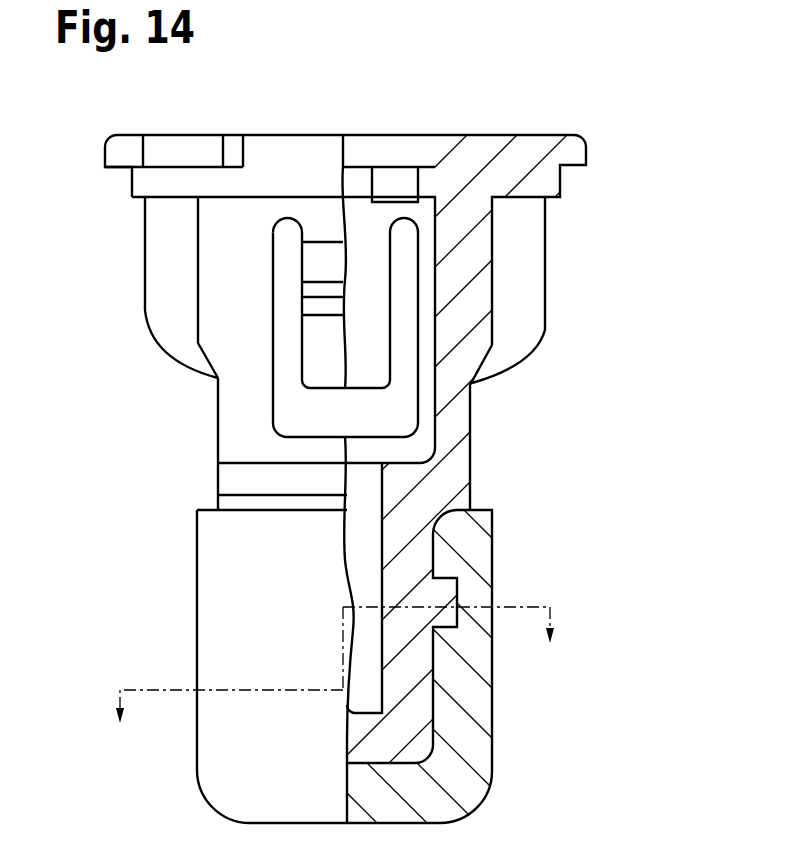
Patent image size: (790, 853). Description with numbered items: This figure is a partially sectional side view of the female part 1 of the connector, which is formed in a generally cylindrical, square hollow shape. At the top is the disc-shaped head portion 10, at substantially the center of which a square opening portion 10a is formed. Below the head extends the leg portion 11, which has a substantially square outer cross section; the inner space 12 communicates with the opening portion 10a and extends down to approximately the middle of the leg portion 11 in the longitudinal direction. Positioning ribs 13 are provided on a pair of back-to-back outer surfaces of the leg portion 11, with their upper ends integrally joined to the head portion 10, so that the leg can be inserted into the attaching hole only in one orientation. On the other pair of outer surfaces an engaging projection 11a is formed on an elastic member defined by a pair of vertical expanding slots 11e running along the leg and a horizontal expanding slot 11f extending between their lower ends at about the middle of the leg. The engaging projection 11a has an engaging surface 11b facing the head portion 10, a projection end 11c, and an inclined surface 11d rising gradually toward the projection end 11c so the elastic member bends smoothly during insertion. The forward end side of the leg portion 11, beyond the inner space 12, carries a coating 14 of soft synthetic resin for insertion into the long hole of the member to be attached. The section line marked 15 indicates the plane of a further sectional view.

The female part 1 is at (603, 168).
The head portion 10 is at (508, 163).
The opening portion 10a is at (381, 152).
The leg portion 11 is at (473, 463).
The engaging projection 11a is at (310, 343).
The engaging surface 11b is at (322, 282).
The projection end 11c is at (303, 303).
The inclined surface 11d is at (312, 365).
The vertical expanding slot 11e is at (283, 317).
The horizontal expanding slot 11f is at (287, 415).
The inner space 12 is at (423, 383).
The positioning rib 13 is at (160, 232).
The coating 14 is at (492, 718).
The section line 15 is at (338, 686).